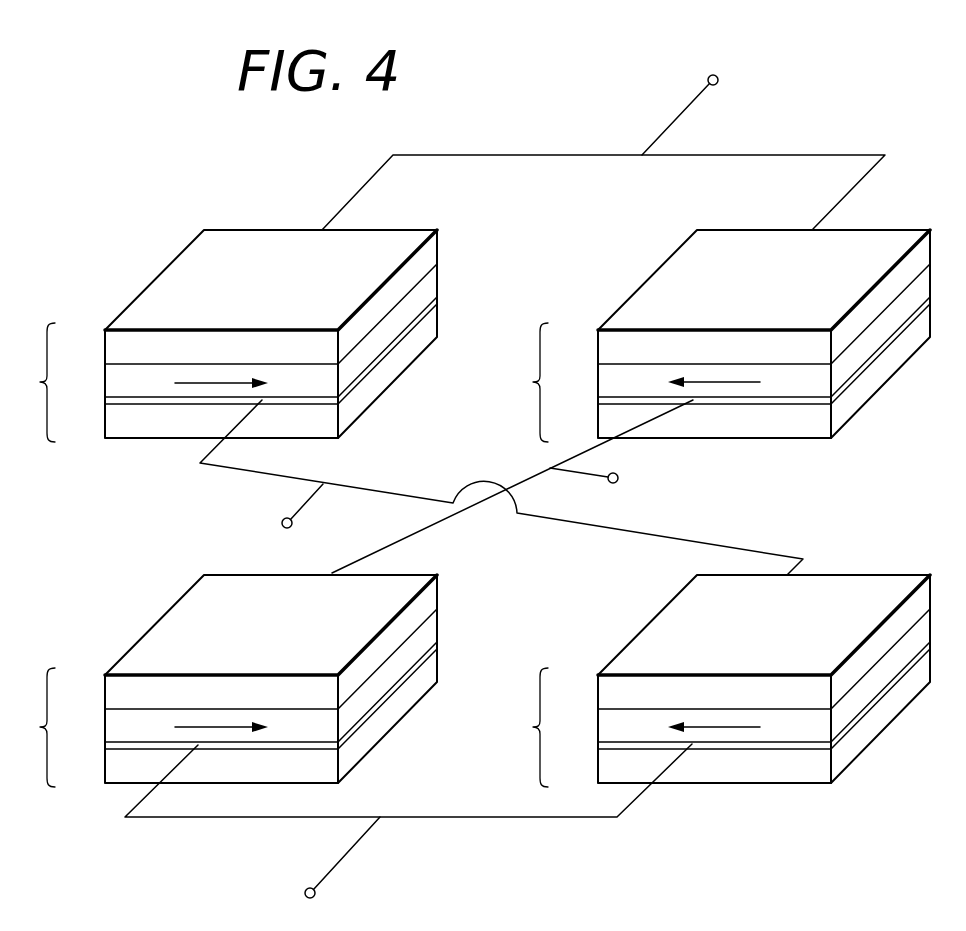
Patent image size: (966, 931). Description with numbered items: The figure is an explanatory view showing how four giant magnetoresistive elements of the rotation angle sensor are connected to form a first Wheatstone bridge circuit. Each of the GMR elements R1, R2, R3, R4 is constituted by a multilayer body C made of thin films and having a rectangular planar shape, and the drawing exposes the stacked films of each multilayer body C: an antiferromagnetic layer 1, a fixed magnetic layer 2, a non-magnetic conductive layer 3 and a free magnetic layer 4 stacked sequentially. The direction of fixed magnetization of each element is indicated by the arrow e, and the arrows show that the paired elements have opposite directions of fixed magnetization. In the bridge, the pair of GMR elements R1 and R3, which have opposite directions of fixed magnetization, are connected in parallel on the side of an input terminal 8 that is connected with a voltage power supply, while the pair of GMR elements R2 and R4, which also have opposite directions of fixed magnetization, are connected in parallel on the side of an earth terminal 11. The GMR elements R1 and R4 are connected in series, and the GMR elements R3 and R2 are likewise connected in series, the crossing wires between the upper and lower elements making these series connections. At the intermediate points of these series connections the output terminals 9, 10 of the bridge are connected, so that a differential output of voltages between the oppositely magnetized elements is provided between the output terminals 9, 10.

The GMR element R1 is at (184, 232).
The GMR element R2 is at (184, 577).
The GMR element R3 is at (906, 220).
The GMR element R4 is at (906, 567).
The antiferromagnetic layer 1 is at (123, 345).
The fixed magnetic layer 2 is at (123, 374).
The non-magnetic conductive layer 3 is at (125, 401).
The free magnetic layer 4 is at (123, 424).
The multilayer body C is at (284, 555).
The direction of fixed magnetization e is at (467, 555).
The input terminal 8 is at (719, 78).
The output terminal 9 is at (281, 521).
The output terminal 10 is at (619, 477).
The earth terminal 11 is at (304, 891).